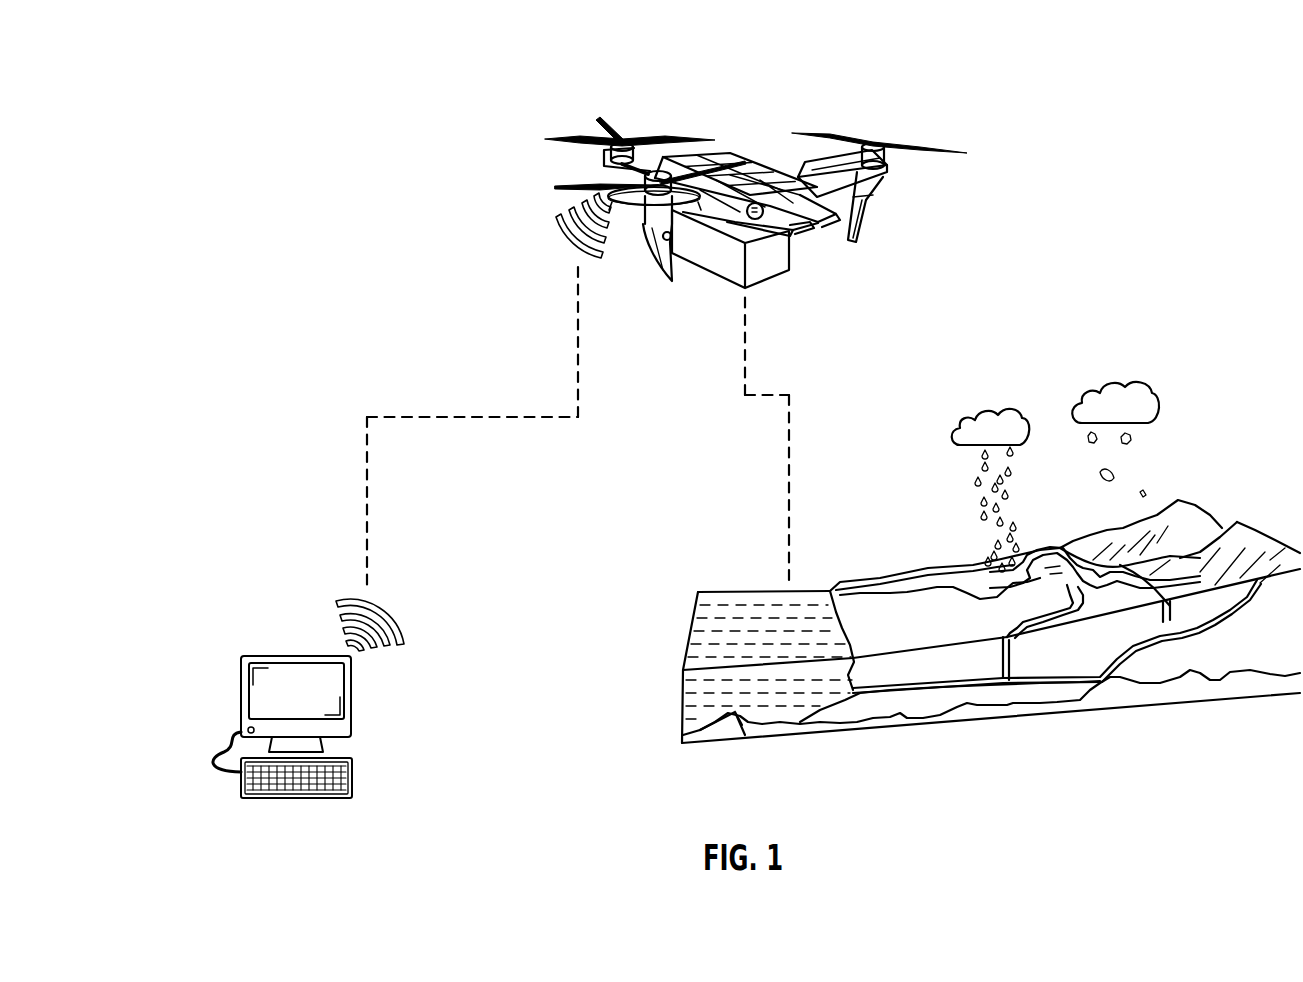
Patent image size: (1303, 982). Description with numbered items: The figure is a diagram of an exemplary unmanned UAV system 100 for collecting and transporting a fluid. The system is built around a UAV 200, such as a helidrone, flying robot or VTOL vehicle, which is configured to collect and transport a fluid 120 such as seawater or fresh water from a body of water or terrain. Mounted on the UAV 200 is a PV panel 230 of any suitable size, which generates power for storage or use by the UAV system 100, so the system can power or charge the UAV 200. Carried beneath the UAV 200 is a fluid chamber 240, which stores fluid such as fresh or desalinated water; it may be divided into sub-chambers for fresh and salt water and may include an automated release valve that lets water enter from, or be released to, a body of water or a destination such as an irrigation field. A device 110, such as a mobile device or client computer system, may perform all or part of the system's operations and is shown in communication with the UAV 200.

The UAV system 100 is at (1048, 85).
The device 110 is at (233, 655).
The fluid 120 is at (753, 607).
The UAV 200 is at (563, 112).
The PV panel 230 is at (742, 158).
The fluid chamber 240 is at (765, 258).